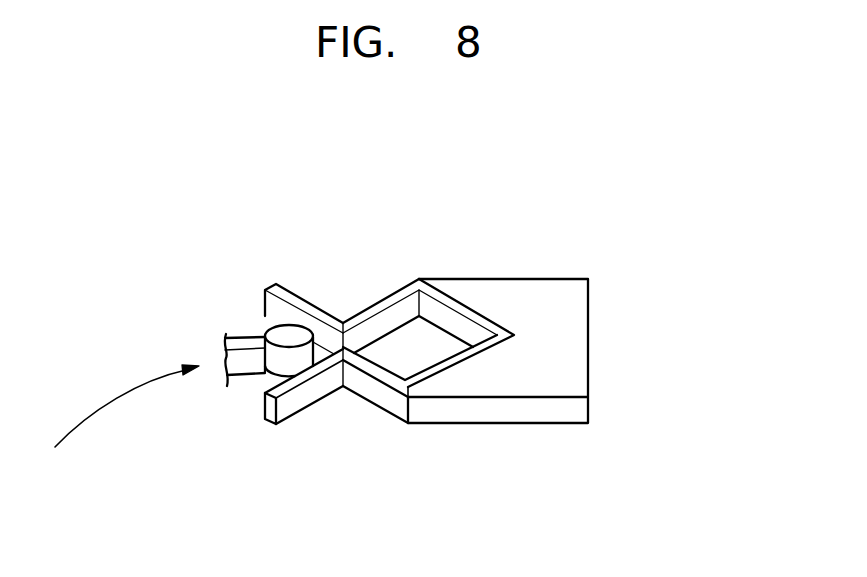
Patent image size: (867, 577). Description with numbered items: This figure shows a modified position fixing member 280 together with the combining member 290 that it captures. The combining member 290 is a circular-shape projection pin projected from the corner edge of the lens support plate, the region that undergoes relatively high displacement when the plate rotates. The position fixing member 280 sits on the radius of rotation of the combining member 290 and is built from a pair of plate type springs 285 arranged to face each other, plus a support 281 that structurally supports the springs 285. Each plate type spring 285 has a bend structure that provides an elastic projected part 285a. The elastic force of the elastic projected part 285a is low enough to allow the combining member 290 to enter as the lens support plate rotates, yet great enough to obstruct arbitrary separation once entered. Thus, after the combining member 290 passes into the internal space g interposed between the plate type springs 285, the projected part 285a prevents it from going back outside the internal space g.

The position fixing member 280 is at (602, 323).
The support 281 is at (534, 300).
The plate type springs 285 is at (386, 400).
The elastic projected part 285a is at (343, 333).
The internal space g is at (428, 345).
The combining member 290 is at (245, 340).